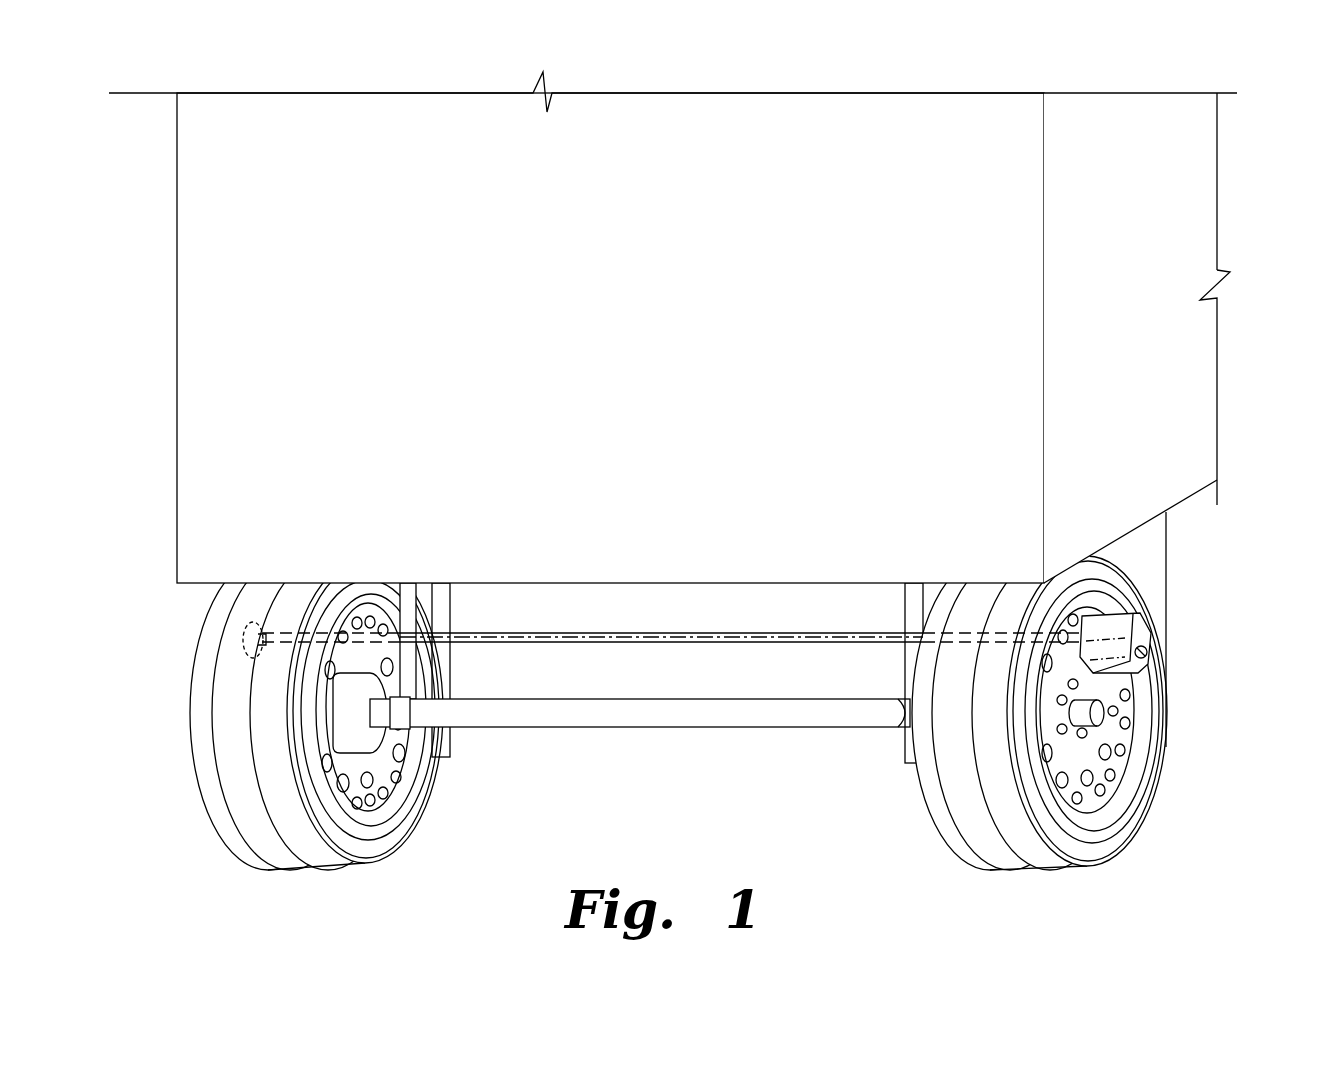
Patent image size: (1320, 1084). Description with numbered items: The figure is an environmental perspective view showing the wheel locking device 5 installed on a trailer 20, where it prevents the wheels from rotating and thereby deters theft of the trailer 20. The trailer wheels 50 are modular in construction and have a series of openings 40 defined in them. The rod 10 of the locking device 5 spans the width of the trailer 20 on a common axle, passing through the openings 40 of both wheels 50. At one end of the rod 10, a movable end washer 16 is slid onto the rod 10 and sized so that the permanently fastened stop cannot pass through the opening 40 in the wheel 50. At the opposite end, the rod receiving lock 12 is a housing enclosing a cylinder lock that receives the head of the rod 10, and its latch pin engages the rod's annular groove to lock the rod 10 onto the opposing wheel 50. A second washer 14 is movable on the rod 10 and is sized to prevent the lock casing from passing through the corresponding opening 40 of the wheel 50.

The wheel locking device 5 is at (761, 676).
The rod 10 is at (640, 633).
The rod receiving lock 12 is at (1145, 640).
The second washer 14 is at (1113, 574).
The movable end washer 16 is at (247, 627).
The trailer 20 is at (550, 352).
The openings 40 is at (1107, 758).
The trailer wheels 50 is at (1128, 710).